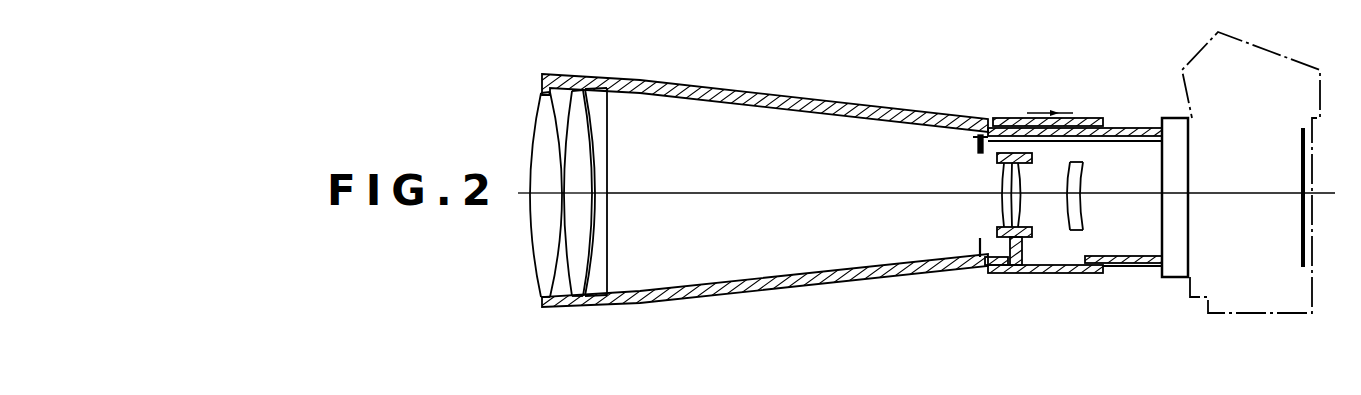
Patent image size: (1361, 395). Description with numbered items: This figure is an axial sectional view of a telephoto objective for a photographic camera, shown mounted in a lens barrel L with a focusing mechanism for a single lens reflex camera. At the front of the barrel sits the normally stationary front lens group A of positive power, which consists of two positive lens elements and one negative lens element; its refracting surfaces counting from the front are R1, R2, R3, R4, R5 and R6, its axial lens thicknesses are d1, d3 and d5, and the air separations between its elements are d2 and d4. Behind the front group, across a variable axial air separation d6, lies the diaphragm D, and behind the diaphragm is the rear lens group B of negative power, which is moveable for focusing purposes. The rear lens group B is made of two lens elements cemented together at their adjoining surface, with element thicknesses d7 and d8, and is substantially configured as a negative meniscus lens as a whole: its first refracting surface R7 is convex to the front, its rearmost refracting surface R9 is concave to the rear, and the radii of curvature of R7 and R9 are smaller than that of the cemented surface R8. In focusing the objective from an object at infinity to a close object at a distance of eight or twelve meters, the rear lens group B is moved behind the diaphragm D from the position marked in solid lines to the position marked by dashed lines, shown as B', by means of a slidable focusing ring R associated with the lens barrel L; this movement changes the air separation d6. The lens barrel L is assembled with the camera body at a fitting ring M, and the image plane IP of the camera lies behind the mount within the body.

The front lens group A is at (602, 70).
The rear lens group B is at (1048, 169).
The rear lens group (focused position) B' is at (1078, 151).
The diaphragm D is at (978, 146).
The lens barrel L is at (790, 283).
The focusing ring R is at (1068, 274).
The fitting ring M is at (1173, 270).
The image plane IP is at (1301, 153).
The first refracting surface R1 is at (532, 252).
The second refracting surface R2 is at (552, 279).
The third refracting surface R3 is at (563, 293).
The fourth refracting surface R4 is at (577, 293).
The fifth refracting surface R5 is at (593, 297).
The sixth refracting surface R6 is at (608, 263).
The seventh refracting surface R7 is at (1002, 203).
The eighth refracting surface R8 is at (1011, 216).
The ninth refracting surface R9 is at (1021, 215).
The first axial thickness d1 is at (546, 186).
The first air separation d2 is at (561, 188).
The second axial thickness d3 is at (579, 186).
The second air separation d4 is at (595, 188).
The third axial thickness d5 is at (605, 192).
The variable air separation d6 is at (805, 188).
The fourth axial thickness d7 is at (1003, 193).
The fifth axial thickness d8 is at (1020, 193).